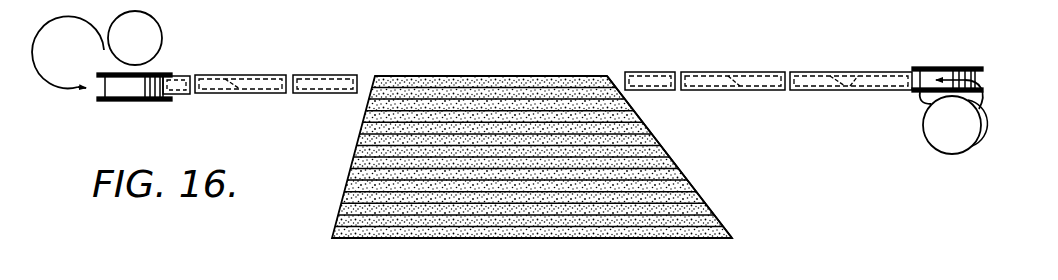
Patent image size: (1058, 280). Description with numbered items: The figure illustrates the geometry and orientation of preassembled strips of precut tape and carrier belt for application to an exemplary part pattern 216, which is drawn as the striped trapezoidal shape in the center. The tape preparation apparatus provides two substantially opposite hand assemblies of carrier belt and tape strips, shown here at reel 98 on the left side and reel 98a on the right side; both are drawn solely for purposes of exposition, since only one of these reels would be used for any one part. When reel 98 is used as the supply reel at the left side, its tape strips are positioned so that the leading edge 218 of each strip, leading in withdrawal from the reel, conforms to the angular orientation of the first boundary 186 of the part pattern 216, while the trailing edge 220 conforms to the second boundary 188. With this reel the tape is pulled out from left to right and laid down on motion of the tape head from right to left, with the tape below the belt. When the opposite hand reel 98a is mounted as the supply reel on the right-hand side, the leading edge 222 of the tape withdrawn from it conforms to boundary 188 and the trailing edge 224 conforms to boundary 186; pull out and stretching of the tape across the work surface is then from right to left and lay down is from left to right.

The reel 98 is at (166, 73).
The opposite hand reel 98a is at (918, 94).
The trailing edge 220 is at (241, 75).
The leading edge 218 is at (347, 79).
The leading edge 222 is at (633, 72).
The trailing edge 224 is at (738, 71).
The second boundary 188 is at (532, 157).
The first boundary 186 is at (663, 150).
The part pattern 216 is at (706, 192).